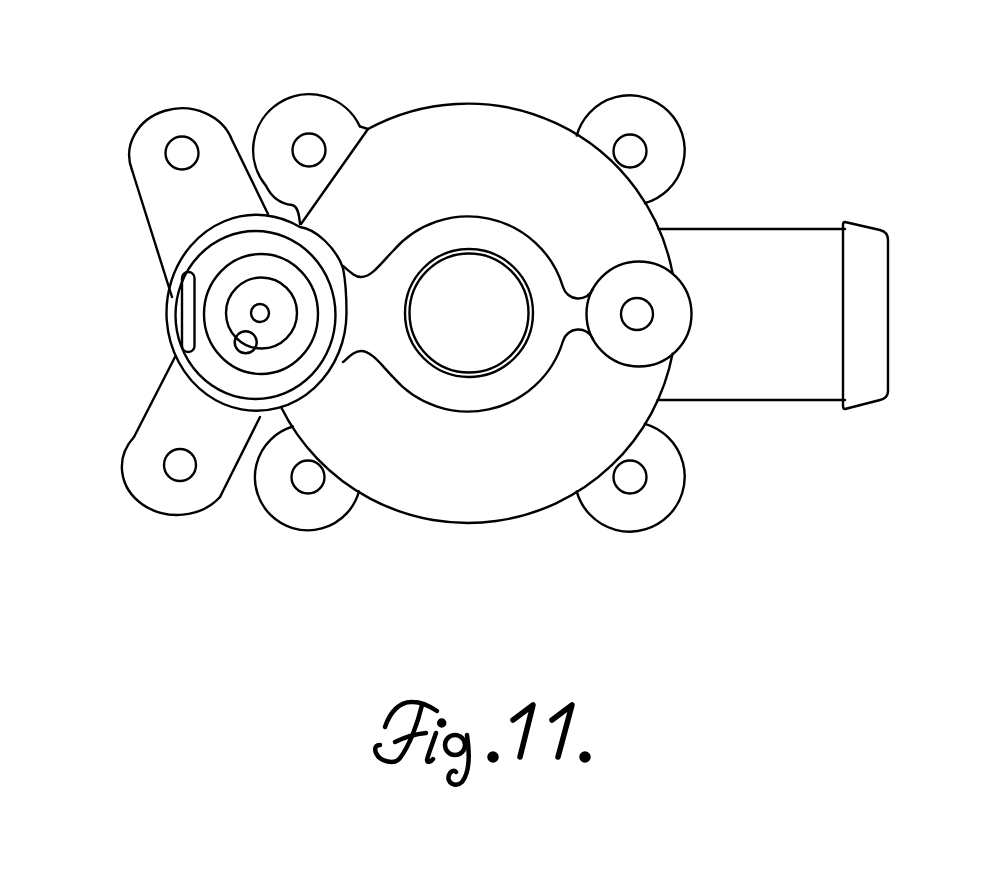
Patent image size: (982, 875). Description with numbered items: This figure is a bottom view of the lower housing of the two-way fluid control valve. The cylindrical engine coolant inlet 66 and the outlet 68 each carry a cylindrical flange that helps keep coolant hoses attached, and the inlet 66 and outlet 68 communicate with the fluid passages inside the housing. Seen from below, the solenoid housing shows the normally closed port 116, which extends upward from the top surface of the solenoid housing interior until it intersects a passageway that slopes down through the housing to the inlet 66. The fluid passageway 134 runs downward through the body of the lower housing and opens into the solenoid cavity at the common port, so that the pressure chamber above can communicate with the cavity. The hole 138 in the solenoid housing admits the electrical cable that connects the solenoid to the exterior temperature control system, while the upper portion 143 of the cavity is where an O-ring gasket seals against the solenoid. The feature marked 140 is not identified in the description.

The engine coolant inlet 66 is at (498, 297).
The outlet 68 is at (760, 402).
The normally closed port 116 is at (252, 313).
The fluid passageway 134 is at (245, 354).
The hole 138 is at (182, 313).
The disc face 140 is at (205, 362).
The upper portion 143 is at (235, 288).